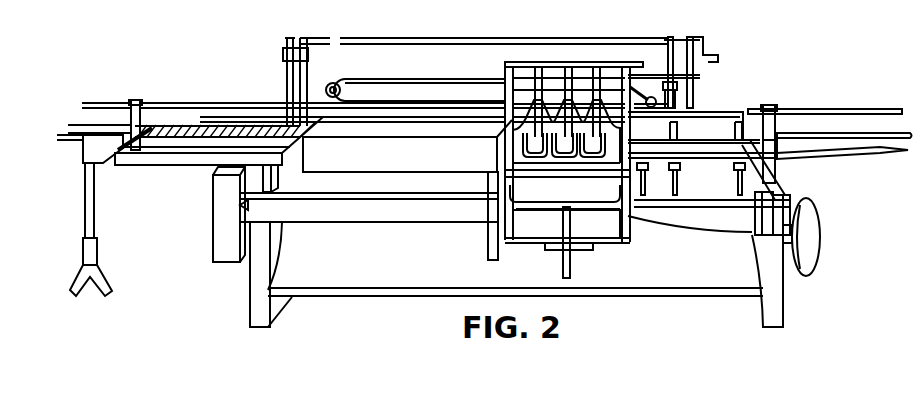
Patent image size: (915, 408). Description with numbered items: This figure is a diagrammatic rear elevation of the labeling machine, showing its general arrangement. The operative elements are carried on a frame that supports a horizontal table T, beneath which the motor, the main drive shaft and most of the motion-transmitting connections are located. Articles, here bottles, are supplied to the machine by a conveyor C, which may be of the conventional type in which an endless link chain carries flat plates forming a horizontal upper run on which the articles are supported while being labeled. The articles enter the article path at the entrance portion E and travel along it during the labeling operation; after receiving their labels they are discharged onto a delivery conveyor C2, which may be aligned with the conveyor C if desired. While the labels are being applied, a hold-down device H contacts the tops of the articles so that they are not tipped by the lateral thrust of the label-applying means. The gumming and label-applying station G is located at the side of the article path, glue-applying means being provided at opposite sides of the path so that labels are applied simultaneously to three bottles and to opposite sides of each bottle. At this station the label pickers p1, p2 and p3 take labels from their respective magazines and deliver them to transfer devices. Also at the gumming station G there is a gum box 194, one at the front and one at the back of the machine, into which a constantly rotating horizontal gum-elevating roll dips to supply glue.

The conveyor C is at (873, 119).
The delivery conveyor C2 is at (190, 125).
The hold-down device H is at (440, 70).
The gumming and label-applying station G is at (610, 50).
The label picker p1 is at (598, 115).
The label picker p2 is at (577, 100).
The label picker p3 is at (525, 132).
The entrance portion to the article path E is at (735, 99).
The horizontal table T is at (445, 190).
The gum box 194 is at (595, 208).